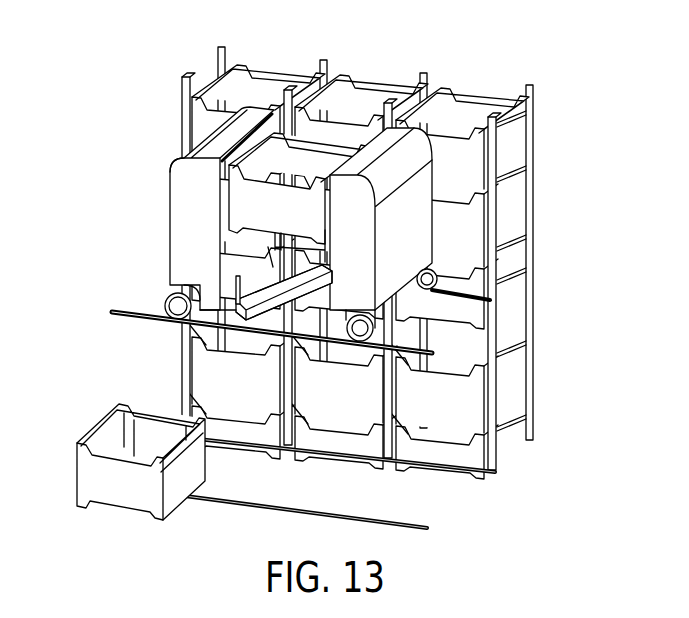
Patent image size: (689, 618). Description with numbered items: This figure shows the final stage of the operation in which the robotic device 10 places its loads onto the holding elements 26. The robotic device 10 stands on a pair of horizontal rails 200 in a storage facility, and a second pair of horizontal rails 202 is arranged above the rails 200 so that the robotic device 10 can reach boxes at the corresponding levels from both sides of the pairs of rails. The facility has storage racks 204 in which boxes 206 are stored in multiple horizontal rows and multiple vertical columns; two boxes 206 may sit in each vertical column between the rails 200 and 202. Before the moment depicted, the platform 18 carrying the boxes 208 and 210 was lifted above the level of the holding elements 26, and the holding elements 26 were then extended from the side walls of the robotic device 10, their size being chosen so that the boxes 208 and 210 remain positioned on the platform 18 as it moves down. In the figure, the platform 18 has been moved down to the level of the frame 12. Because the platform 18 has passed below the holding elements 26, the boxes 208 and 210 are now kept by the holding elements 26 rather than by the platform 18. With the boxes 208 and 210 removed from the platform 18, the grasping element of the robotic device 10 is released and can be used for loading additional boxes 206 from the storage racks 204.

The robotic device 10 is at (286, 211).
The frame 12 is at (233, 317).
The platform 18 is at (243, 295).
The holding elements 26 is at (220, 228).
The rails 200 is at (258, 508).
The horizontal rails 202 is at (118, 312).
The storage racks 204 is at (387, 262).
The boxes 206 is at (478, 106).
The box 208 is at (290, 177).
The box 210 is at (333, 148).